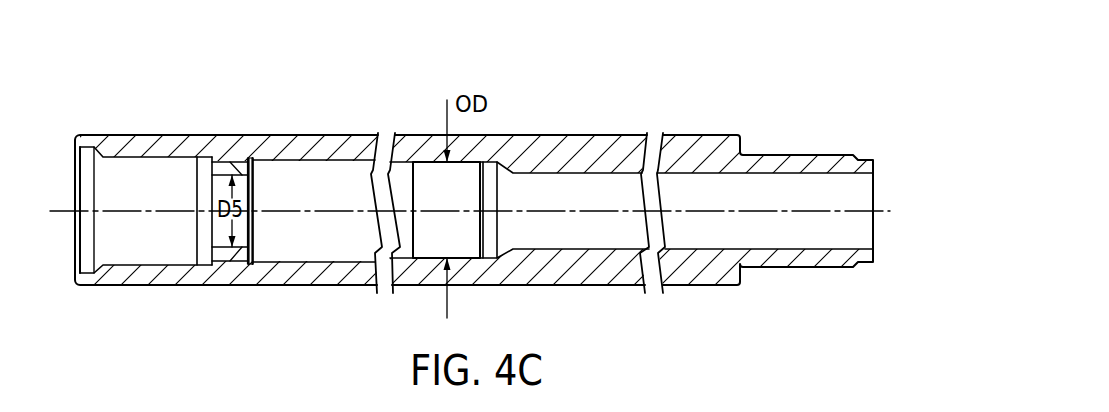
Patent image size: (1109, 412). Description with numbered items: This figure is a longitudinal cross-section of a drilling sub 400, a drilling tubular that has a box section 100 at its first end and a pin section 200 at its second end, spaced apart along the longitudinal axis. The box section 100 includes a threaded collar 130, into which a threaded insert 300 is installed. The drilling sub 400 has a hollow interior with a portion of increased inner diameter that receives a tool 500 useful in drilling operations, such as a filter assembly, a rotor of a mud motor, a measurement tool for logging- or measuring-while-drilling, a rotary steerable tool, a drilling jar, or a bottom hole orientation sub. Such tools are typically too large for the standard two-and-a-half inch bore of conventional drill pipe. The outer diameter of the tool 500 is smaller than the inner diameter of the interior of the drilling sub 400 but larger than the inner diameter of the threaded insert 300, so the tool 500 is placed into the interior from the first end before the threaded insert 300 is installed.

The box section 100 is at (160, 128).
The threaded collar 130 is at (234, 158).
The pin section 200 is at (805, 143).
The threaded insert 300 is at (233, 263).
The drilling sub 400 is at (693, 89).
The tool 500 is at (455, 248).